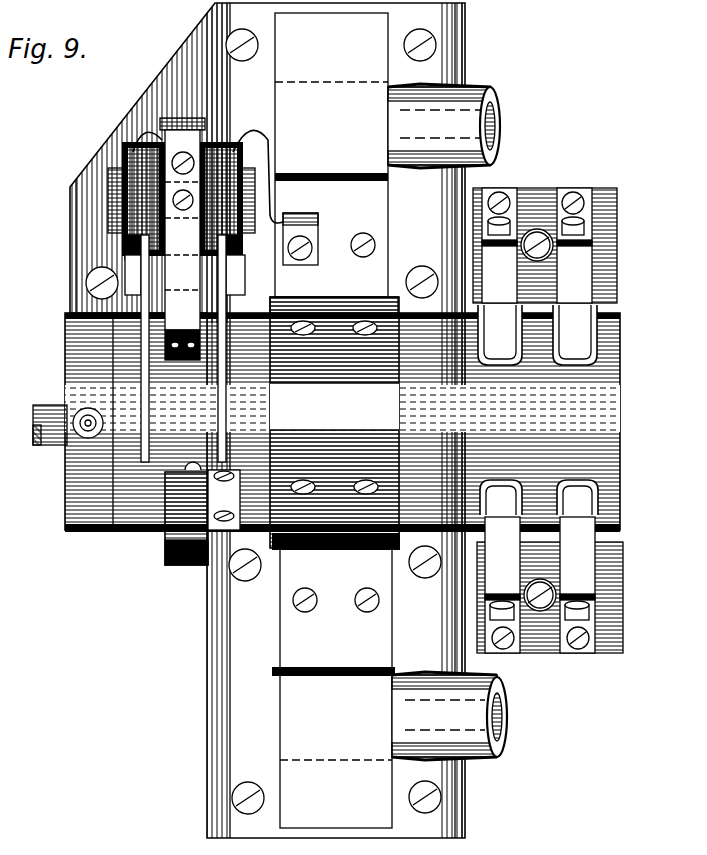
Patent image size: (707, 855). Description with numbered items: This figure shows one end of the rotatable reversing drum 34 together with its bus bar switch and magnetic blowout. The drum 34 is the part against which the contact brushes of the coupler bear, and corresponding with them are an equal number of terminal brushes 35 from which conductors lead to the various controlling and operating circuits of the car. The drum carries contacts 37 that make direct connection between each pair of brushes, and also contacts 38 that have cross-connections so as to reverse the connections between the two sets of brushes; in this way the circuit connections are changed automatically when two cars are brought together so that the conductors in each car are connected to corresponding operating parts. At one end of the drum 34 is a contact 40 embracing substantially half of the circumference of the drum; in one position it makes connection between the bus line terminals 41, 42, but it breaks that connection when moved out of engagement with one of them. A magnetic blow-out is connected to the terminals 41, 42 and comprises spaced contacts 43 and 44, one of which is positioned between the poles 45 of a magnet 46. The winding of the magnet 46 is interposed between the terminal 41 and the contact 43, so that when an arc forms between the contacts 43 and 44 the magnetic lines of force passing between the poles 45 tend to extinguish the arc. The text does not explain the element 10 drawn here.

The terminal block 10 is at (603, 288).
The reversing drum 34 is at (128, 537).
The terminal brushes 35 is at (582, 272).
The contacts 37 is at (466, 344).
The contacts 38 is at (488, 482).
The contact 40 is at (395, 417).
The bus line terminal 41 is at (380, 208).
The bus line terminal 42 is at (385, 637).
The contact 43 is at (177, 238).
The contact 44 is at (186, 566).
The poles 45 is at (145, 357).
The magnet 46 is at (122, 152).